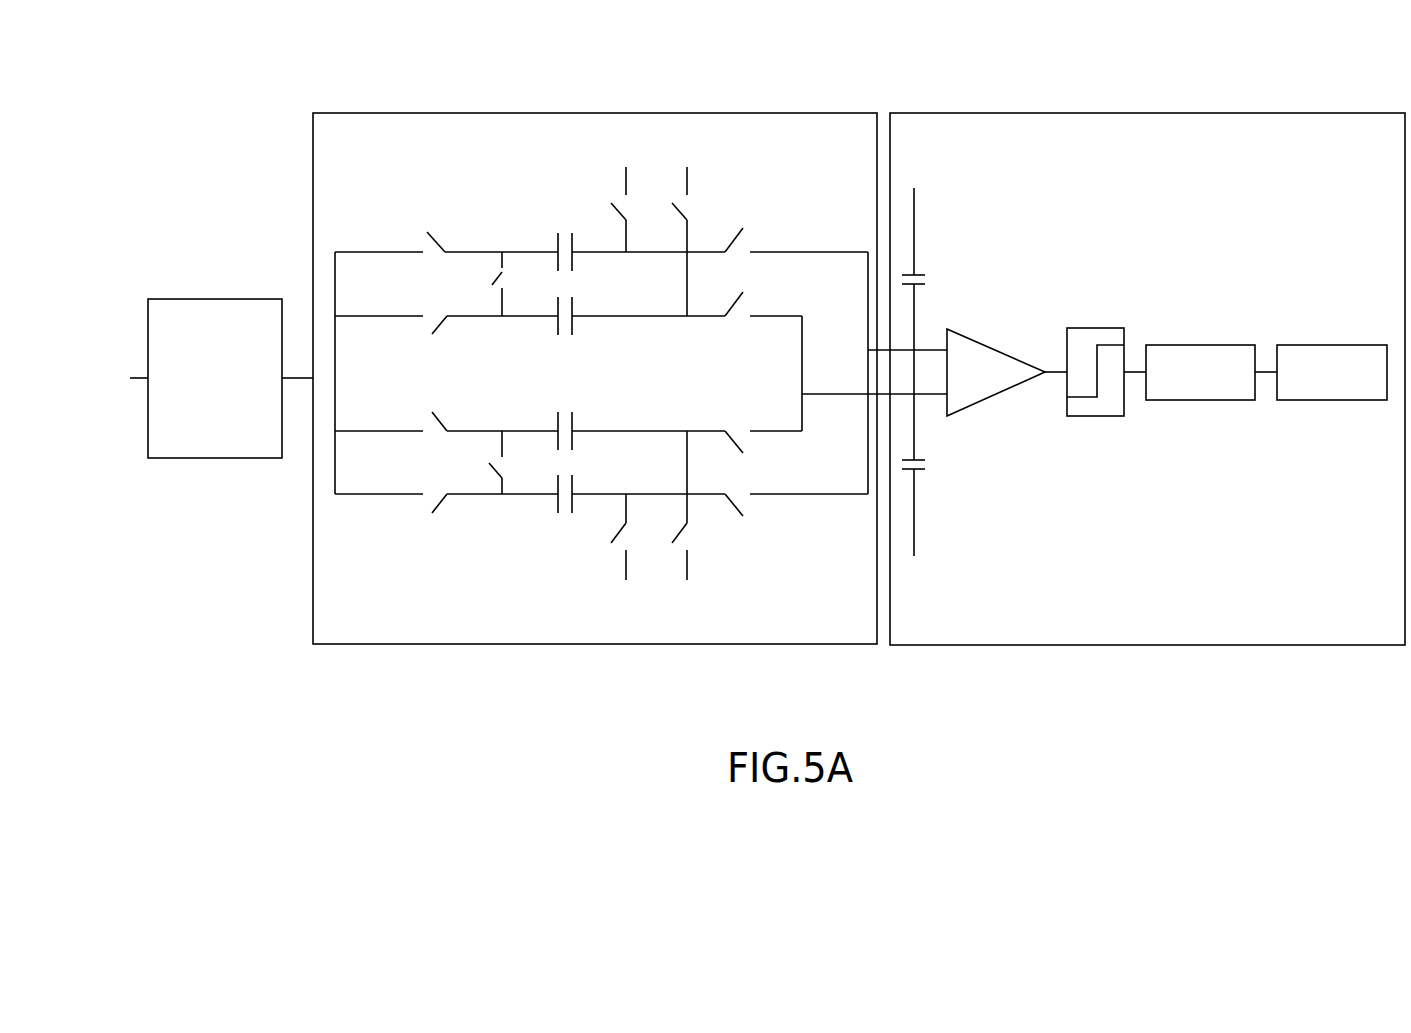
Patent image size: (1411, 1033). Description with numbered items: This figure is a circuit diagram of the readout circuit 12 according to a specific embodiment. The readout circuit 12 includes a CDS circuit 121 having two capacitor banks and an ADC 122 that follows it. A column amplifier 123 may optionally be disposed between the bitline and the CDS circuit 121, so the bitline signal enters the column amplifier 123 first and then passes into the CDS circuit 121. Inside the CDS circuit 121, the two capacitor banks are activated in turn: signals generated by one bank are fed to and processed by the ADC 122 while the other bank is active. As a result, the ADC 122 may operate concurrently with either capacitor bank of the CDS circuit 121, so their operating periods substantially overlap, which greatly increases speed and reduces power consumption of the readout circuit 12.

The readout circuit 12 is at (207, 81).
The CDS circuit 121 is at (597, 113).
The ADC 122 is at (1146, 113).
The column amplifier 123 is at (213, 299).